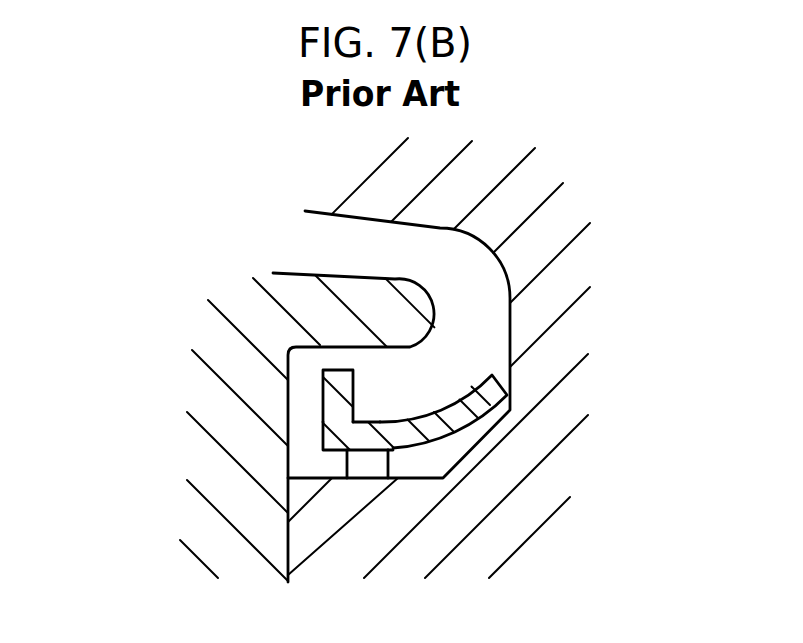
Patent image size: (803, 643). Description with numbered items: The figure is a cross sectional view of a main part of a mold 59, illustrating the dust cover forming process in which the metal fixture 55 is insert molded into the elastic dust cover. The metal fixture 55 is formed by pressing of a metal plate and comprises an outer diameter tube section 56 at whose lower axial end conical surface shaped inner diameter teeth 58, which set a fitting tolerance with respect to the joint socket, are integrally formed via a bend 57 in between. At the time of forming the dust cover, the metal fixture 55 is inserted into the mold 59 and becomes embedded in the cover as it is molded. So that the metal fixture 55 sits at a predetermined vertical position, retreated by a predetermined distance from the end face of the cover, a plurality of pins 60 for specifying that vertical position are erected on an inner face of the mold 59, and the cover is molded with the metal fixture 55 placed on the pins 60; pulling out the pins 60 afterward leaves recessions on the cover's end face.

The metal fixture 55 is at (337, 409).
The outer diameter tube section 56 is at (338, 375).
The bend 57 is at (335, 450).
The inner diameter teeth 58 is at (497, 383).
The mold 59 is at (557, 218).
The pins 60 is at (375, 465).